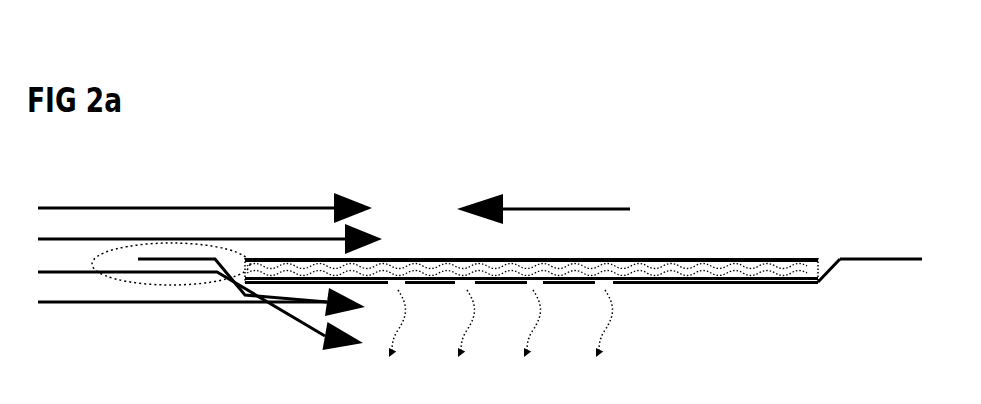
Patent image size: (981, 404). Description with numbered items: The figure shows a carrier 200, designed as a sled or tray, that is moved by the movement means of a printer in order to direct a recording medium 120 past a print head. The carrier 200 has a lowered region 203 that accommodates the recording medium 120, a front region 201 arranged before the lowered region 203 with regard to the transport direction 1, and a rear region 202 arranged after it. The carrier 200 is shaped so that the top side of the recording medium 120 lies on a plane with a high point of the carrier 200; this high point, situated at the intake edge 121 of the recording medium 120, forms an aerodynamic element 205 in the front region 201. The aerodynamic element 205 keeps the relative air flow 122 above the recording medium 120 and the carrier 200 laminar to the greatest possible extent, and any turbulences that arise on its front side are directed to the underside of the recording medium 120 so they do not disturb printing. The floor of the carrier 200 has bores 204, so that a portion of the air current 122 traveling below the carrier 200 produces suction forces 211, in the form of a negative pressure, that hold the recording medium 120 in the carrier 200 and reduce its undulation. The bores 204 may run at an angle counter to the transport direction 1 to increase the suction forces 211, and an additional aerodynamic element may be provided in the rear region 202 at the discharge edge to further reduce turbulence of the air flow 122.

The transport direction 1 is at (582, 208).
The recording medium 120 is at (732, 258).
The intake edge 121 is at (257, 262).
The air current 122 is at (110, 205).
The carrier 200 is at (844, 236).
The front region 201 is at (202, 236).
The rear region 202 is at (885, 262).
The lowered region 203 is at (798, 285).
The bores 204 is at (533, 283).
The aerodynamic element 205 is at (163, 286).
The suction forces 211 is at (627, 323).